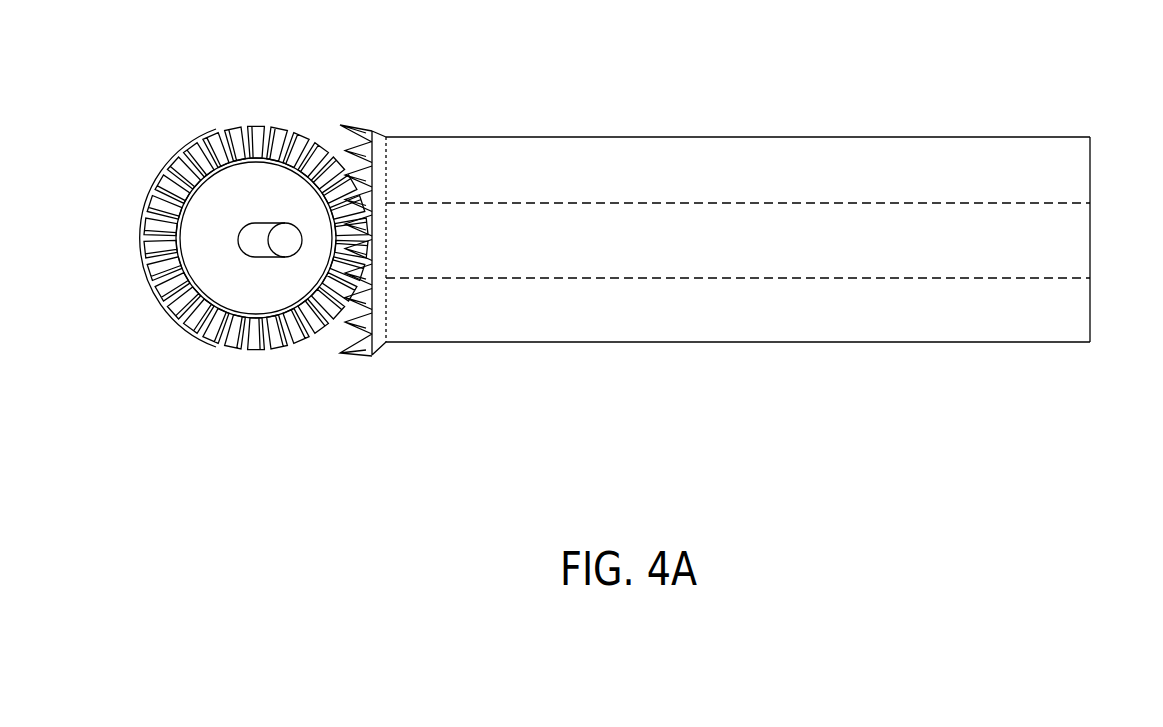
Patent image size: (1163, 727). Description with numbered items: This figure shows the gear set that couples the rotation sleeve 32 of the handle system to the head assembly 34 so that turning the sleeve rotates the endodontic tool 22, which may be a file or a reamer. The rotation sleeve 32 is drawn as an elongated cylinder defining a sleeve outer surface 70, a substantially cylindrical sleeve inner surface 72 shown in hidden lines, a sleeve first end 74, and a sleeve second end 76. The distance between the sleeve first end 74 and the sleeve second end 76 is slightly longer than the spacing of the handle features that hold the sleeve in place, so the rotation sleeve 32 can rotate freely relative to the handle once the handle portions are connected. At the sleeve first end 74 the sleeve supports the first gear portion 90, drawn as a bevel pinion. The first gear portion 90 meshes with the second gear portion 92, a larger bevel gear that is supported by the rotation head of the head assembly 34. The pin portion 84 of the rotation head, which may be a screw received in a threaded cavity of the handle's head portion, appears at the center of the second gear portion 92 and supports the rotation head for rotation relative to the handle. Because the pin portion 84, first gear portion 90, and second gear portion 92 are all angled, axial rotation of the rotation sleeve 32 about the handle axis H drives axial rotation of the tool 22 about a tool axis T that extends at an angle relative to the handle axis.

The endodontic tool 22 is at (141, 238).
The head assembly 34 is at (217, 230).
The second gear portion 92 is at (197, 151).
The pin portion 84 is at (254, 224).
The first gear portion 90 is at (361, 128).
The sleeve first end 74 is at (354, 193).
The rotation sleeve 32 is at (622, 146).
The sleeve outer surface 70 is at (762, 204).
The sleeve inner surface 72 is at (893, 207).
The sleeve second end 76 is at (1085, 115).